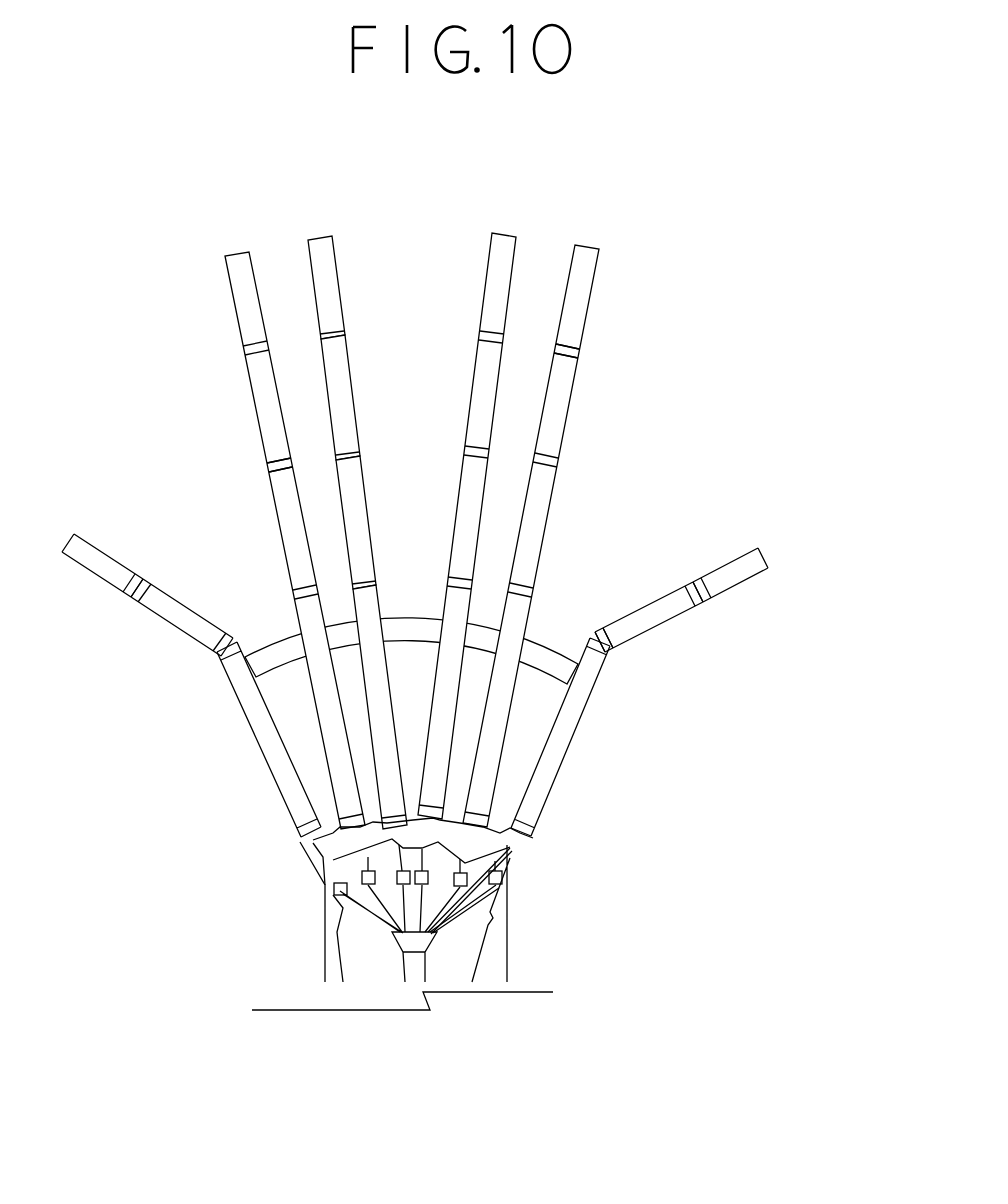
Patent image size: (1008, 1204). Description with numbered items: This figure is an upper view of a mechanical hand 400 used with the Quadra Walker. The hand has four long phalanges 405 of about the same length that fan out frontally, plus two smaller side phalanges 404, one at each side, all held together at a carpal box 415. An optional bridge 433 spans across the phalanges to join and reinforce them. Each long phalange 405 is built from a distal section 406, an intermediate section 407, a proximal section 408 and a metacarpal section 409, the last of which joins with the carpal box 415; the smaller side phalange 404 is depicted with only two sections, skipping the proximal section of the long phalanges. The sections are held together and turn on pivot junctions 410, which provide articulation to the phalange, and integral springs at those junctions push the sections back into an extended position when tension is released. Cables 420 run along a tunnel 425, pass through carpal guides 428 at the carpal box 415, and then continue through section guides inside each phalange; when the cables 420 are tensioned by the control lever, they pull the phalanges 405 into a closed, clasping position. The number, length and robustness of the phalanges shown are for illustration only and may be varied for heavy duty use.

The mechanical hand 400 is at (523, 859).
The side phalange 404 is at (105, 551).
The long phalange 405 is at (247, 258).
The distal section 406 is at (333, 283).
The intermediate section 407 is at (342, 380).
The proximal section 408 is at (355, 512).
The metacarpal section 409 is at (365, 610).
The pivot junction 410 is at (574, 357).
The carpal box 415 is at (320, 853).
The cable 420 is at (357, 889).
The tunnel 425 is at (408, 950).
The carpal guide 428 is at (333, 891).
The bridge 433 is at (543, 644).